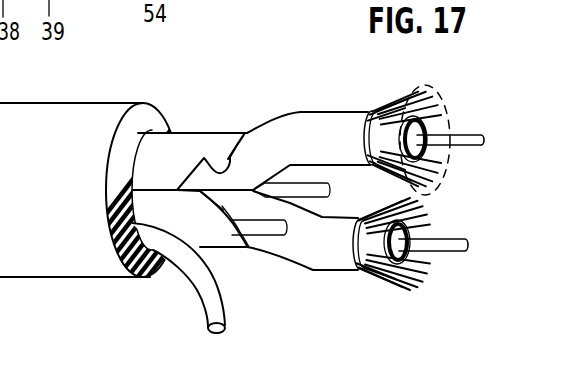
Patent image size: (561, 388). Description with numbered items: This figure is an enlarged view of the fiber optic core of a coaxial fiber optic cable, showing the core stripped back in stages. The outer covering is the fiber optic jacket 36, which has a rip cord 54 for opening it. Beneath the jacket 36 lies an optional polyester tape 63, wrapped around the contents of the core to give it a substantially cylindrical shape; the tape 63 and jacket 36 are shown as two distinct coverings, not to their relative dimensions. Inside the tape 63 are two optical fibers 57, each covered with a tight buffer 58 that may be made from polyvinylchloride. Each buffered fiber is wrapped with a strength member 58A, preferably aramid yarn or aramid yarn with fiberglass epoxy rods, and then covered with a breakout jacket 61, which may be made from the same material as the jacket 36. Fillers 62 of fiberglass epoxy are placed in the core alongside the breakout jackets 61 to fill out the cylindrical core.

The fiber optic jacket 36 is at (127, 273).
The rip cord 54 is at (228, 318).
The polyester tape 63 is at (200, 130).
The breakout jacket 61 is at (330, 110).
The filler 62 is at (277, 237).
The strength member 58A is at (393, 117).
The tight buffer 58 is at (428, 97).
The optical fiber 57 is at (467, 132).